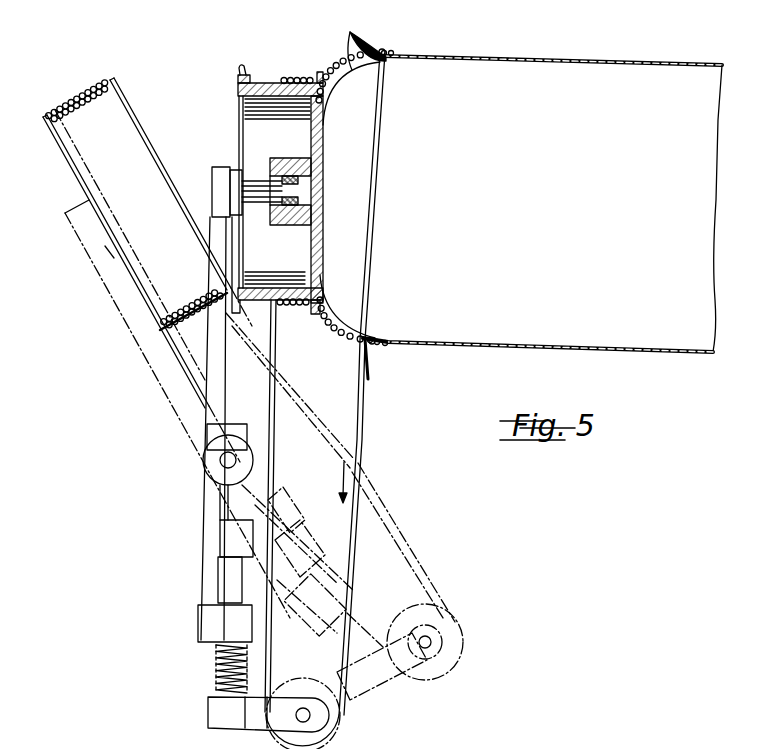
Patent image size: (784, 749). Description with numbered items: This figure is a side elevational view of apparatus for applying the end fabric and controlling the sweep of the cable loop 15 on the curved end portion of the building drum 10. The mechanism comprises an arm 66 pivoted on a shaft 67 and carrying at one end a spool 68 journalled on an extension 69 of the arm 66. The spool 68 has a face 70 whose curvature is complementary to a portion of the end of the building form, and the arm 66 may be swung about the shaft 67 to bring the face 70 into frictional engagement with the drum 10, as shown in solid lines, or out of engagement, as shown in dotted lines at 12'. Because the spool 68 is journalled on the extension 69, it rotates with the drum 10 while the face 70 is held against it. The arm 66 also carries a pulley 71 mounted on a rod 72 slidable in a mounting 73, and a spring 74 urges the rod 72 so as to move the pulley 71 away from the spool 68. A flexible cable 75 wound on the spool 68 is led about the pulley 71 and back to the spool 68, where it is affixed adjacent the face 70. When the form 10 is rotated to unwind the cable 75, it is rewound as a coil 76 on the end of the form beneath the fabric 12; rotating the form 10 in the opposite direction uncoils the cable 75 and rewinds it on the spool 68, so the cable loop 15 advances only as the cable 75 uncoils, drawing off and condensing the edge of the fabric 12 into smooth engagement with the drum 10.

The building drum 10 is at (497, 336).
The fabric 12 is at (221, 384).
The conveyor in alternate position 12' is at (478, 531).
The cable loop 15 is at (393, 54).
The arm 66 is at (198, 595).
The shaft 67 is at (227, 461).
The spool 68 is at (240, 74).
The extension 69 is at (250, 186).
The face 70 is at (322, 126).
The pulley 71 is at (343, 733).
The rod 72 is at (230, 567).
The mounting 73 is at (233, 603).
The spring 74 is at (217, 670).
The flexible cable 75 is at (277, 340).
The coil 76 is at (335, 69).